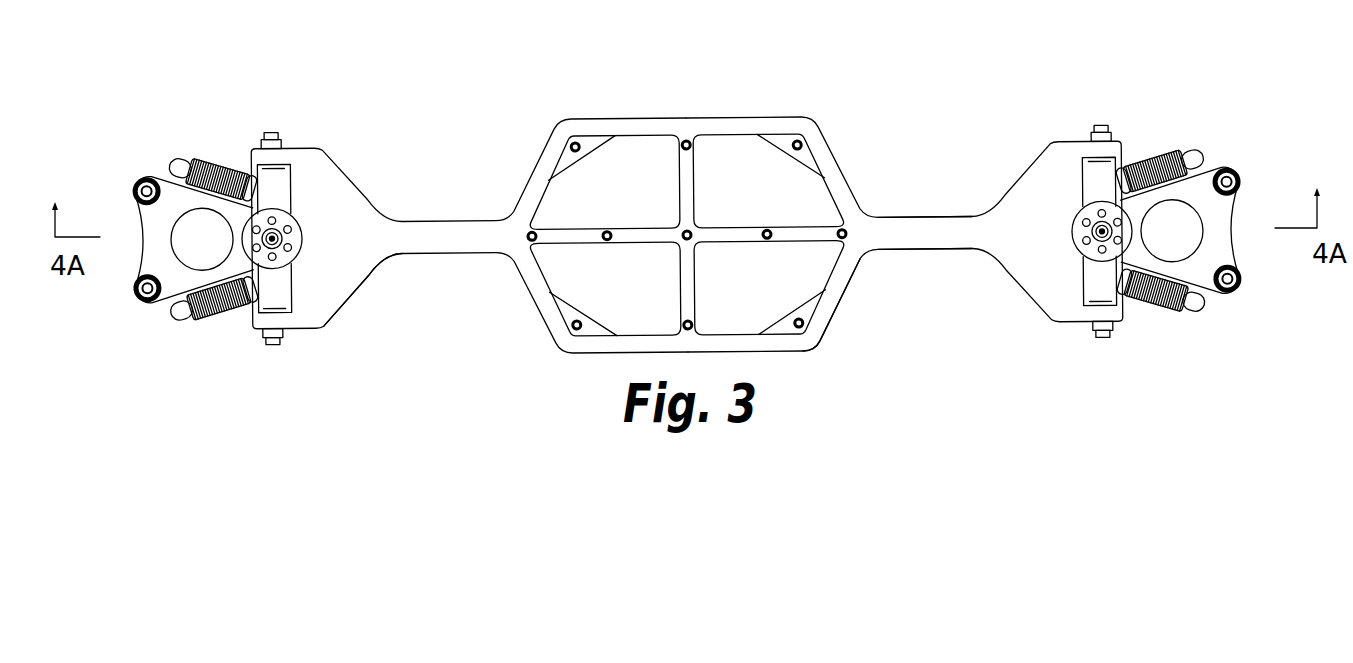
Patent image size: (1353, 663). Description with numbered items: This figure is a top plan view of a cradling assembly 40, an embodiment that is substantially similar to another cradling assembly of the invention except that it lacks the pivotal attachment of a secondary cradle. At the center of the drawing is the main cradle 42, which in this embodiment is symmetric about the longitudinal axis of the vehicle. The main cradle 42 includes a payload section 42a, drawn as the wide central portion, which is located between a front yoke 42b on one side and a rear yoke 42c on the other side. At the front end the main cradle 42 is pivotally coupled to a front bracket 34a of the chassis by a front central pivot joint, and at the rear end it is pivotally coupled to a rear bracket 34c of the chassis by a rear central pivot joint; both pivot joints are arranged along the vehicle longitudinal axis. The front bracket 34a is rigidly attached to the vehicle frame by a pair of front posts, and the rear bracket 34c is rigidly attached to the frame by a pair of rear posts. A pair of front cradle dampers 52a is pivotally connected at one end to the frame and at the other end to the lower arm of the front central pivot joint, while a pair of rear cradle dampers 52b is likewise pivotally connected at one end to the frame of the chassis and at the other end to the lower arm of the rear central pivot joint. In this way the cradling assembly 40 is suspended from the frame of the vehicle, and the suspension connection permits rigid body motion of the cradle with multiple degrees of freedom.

The cradling assembly 40 is at (913, 105).
The main cradle 42 is at (566, 128).
The payload section 42a is at (832, 301).
The front yoke 42b is at (337, 287).
The rear yoke 42c is at (934, 217).
The front cradle dampers 52a is at (215, 152).
The rear cradle dampers 52b is at (1157, 148).
The front bracket 34a is at (154, 243).
The rear bracket 34c is at (1225, 215).